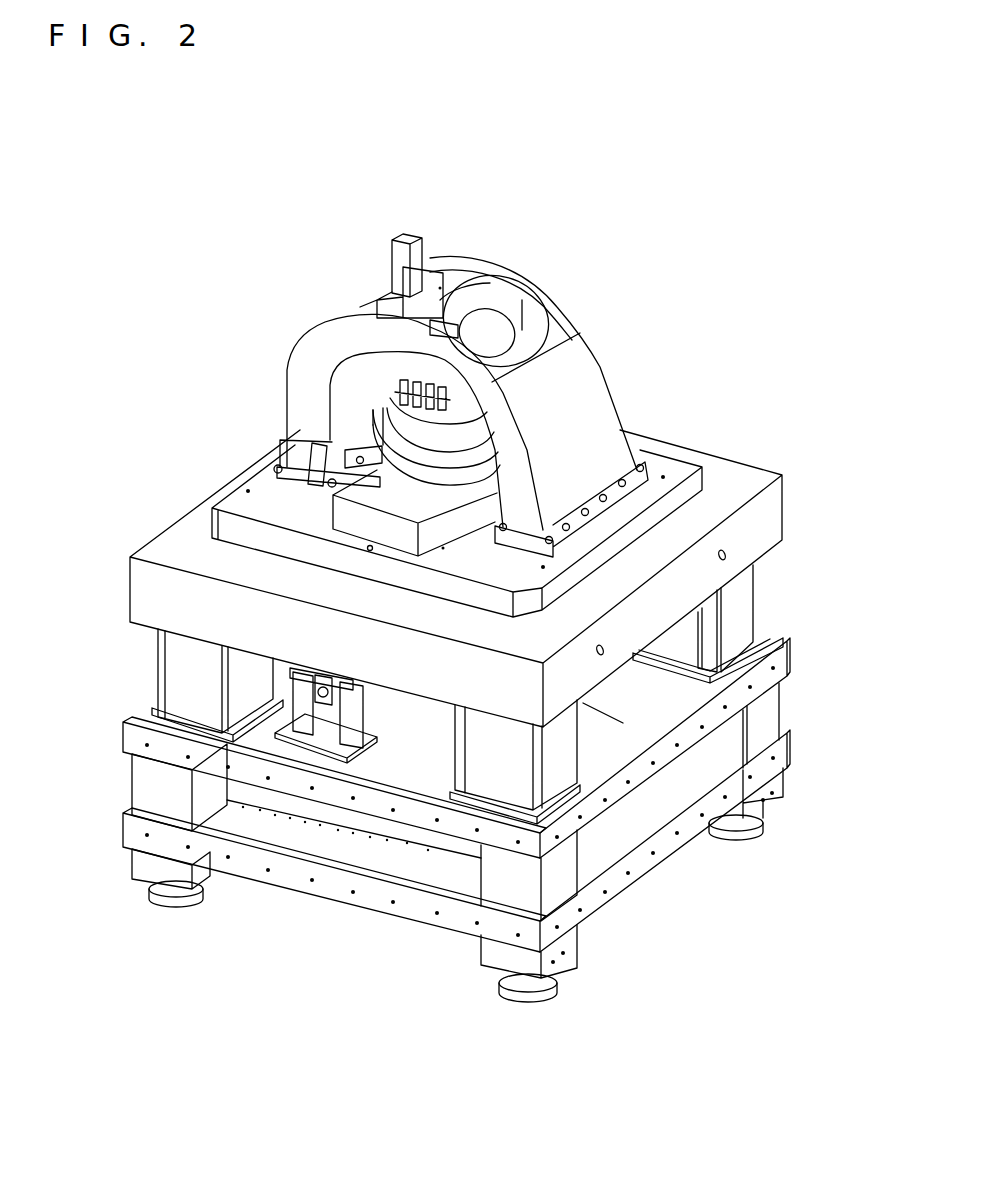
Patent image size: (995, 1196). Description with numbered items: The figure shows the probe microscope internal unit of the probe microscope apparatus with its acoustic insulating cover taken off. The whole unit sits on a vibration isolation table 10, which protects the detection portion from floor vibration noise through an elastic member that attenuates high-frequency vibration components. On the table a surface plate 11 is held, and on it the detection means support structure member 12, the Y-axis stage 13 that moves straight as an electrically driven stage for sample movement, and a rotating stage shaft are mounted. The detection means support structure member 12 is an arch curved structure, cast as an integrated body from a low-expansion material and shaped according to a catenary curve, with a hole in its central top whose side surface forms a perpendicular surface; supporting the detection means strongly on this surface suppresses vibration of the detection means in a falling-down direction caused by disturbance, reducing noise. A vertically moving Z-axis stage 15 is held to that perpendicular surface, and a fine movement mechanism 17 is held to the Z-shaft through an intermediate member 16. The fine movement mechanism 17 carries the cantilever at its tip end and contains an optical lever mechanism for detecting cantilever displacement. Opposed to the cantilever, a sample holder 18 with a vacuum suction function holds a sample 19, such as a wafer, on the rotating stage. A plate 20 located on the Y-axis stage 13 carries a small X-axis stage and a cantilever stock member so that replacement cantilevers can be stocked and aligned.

The vibration isolation table 10 is at (687, 580).
The surface plate 11 is at (702, 467).
The detection means support structure member 12 is at (597, 417).
The Y-axis stage 13 is at (413, 508).
The Z-axis stage 15 is at (391, 250).
The intermediate member 16 is at (442, 315).
The fine movement mechanism 17 is at (510, 303).
The sample holder 18 is at (346, 408).
The sample 19 is at (353, 410).
The plate 20 is at (315, 488).